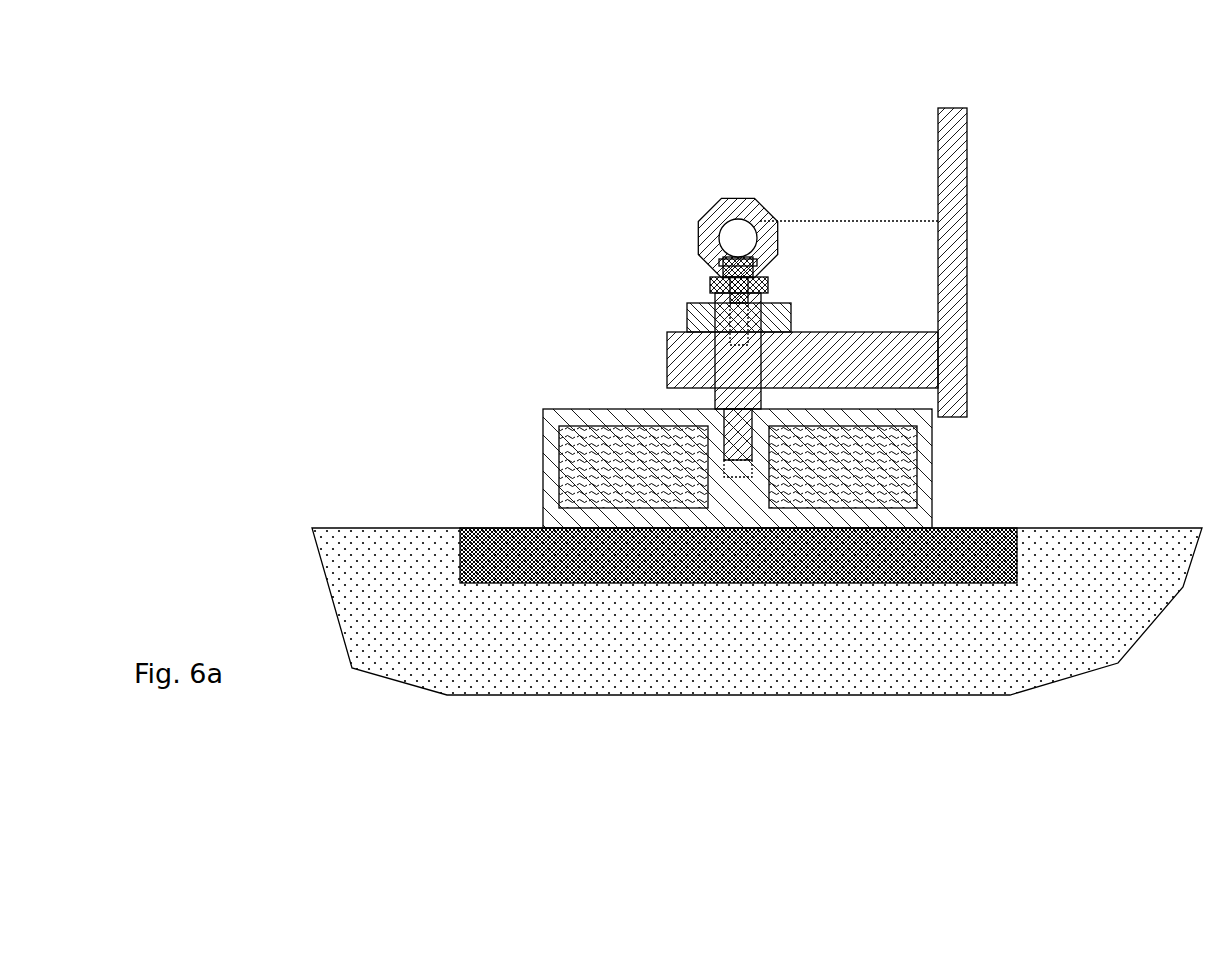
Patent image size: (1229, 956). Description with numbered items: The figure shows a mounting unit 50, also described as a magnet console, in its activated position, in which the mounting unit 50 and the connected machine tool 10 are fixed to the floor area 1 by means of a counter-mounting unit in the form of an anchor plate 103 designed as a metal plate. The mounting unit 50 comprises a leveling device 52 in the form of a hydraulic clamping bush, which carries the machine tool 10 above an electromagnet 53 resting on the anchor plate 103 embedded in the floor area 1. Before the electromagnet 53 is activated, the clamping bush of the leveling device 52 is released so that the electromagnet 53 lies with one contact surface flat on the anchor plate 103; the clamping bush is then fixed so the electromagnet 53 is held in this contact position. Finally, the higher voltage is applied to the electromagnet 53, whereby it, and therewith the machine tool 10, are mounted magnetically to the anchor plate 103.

The floor area 1 is at (1055, 688).
The machine tool 10 is at (927, 135).
The mounting unit 50 is at (787, 289).
The leveling device 52 is at (677, 298).
The electromagnet 53 is at (557, 398).
The anchor plate 103 is at (482, 528).